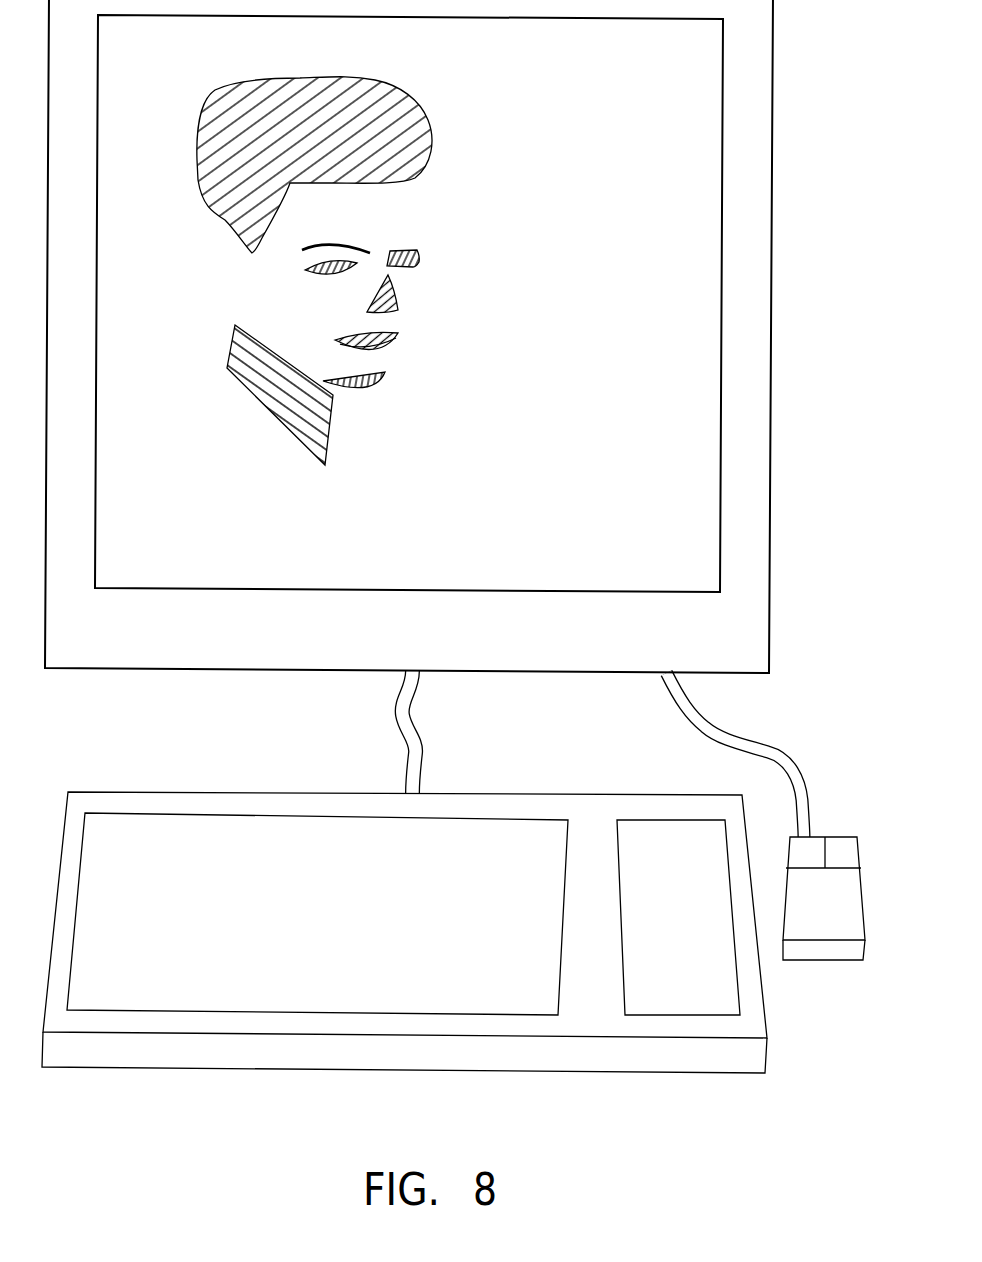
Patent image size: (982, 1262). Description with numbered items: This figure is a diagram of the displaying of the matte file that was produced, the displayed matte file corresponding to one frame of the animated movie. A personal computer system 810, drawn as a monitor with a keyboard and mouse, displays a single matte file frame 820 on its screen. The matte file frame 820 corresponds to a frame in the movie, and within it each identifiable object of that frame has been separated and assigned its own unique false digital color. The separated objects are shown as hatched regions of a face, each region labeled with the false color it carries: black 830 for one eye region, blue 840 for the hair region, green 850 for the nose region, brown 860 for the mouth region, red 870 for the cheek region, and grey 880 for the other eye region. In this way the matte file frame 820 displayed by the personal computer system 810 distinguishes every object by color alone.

The personal computer system 810 is at (770, 512).
The matte file frame 820 is at (402, 272).
The black 830 is at (391, 250).
The blue 840 is at (424, 116).
The green 850 is at (400, 310).
The brown 860 is at (398, 343).
The red 870 is at (327, 444).
The grey 880 is at (416, 262).